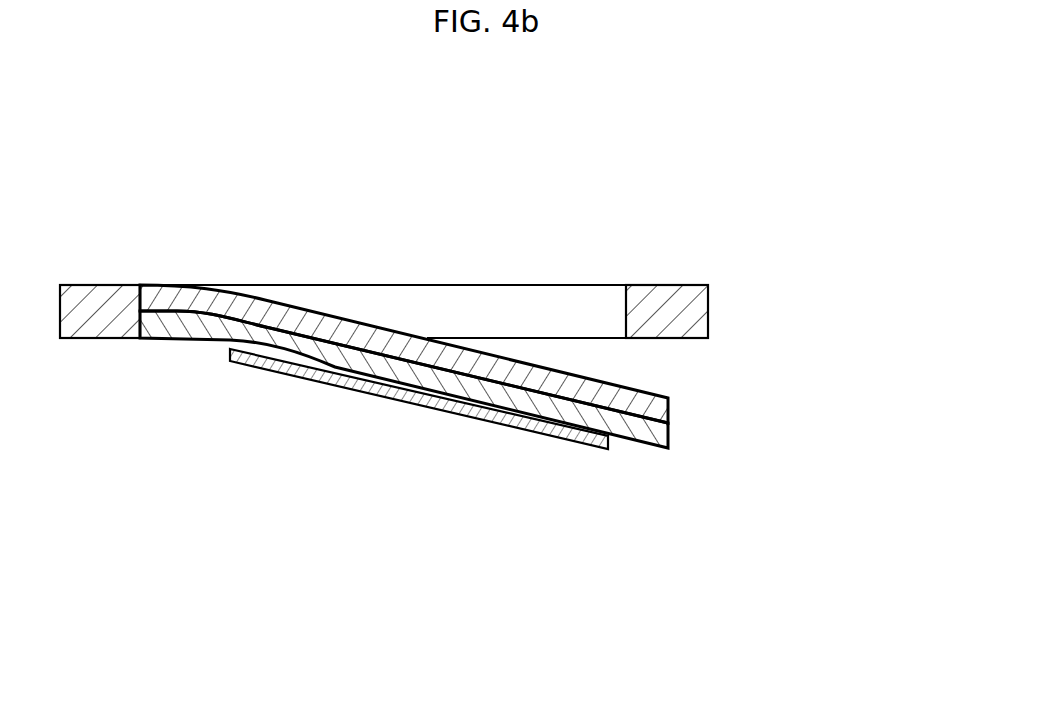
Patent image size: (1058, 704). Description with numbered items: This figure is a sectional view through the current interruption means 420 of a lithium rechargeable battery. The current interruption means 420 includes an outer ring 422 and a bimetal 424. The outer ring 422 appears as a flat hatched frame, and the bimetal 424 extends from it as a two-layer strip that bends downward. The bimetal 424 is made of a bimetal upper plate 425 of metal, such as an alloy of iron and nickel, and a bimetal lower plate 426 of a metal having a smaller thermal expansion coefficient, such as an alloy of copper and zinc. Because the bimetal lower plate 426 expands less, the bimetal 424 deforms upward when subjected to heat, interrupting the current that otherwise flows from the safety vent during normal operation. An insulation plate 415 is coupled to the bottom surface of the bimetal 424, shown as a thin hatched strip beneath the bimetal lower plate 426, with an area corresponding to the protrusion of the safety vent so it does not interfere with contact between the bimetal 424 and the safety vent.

The current interruption means 420 is at (496, 337).
The outer ring 422 is at (693, 319).
The bimetal 424 is at (536, 377).
The bimetal upper plate 425 is at (668, 402).
The bimetal lower plate 426 is at (668, 435).
The insulation plate 415 is at (610, 442).